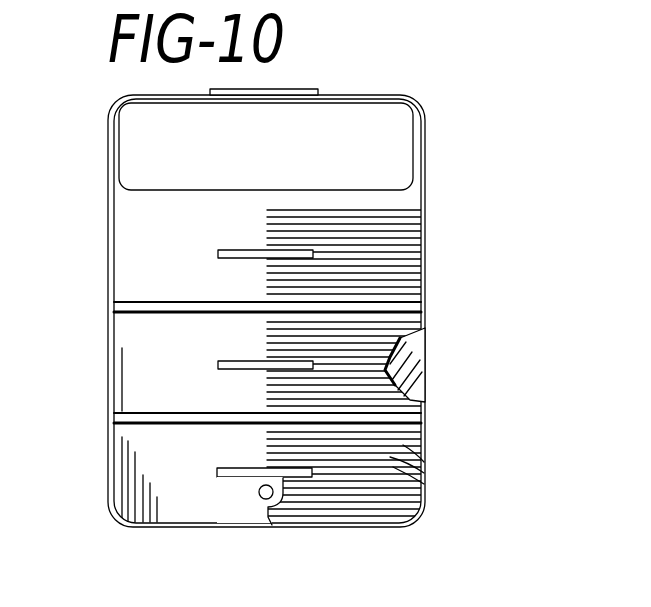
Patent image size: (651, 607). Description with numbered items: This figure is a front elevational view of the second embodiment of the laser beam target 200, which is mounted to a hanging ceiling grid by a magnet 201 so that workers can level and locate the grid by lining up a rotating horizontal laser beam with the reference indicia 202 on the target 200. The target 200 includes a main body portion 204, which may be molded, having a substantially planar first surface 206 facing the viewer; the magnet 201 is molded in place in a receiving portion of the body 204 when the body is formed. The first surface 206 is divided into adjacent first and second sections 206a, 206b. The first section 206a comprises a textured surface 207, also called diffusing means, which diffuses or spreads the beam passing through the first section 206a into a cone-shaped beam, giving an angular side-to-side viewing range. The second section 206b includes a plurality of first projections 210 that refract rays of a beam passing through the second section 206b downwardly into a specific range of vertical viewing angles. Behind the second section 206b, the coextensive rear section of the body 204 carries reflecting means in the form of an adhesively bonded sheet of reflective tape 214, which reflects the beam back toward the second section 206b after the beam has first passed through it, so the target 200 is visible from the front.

The laser beam target 200 is at (451, 127).
The magnet 201 is at (316, 92).
The reference indicia 202 is at (228, 258).
The main body portion 204 is at (160, 527).
The first surface 206 is at (142, 230).
The first section 206a is at (190, 483).
The second section 206b is at (380, 490).
The textured surface 207 is at (123, 278).
The first projections 210 is at (425, 462).
The reflective tape 214 is at (415, 378).